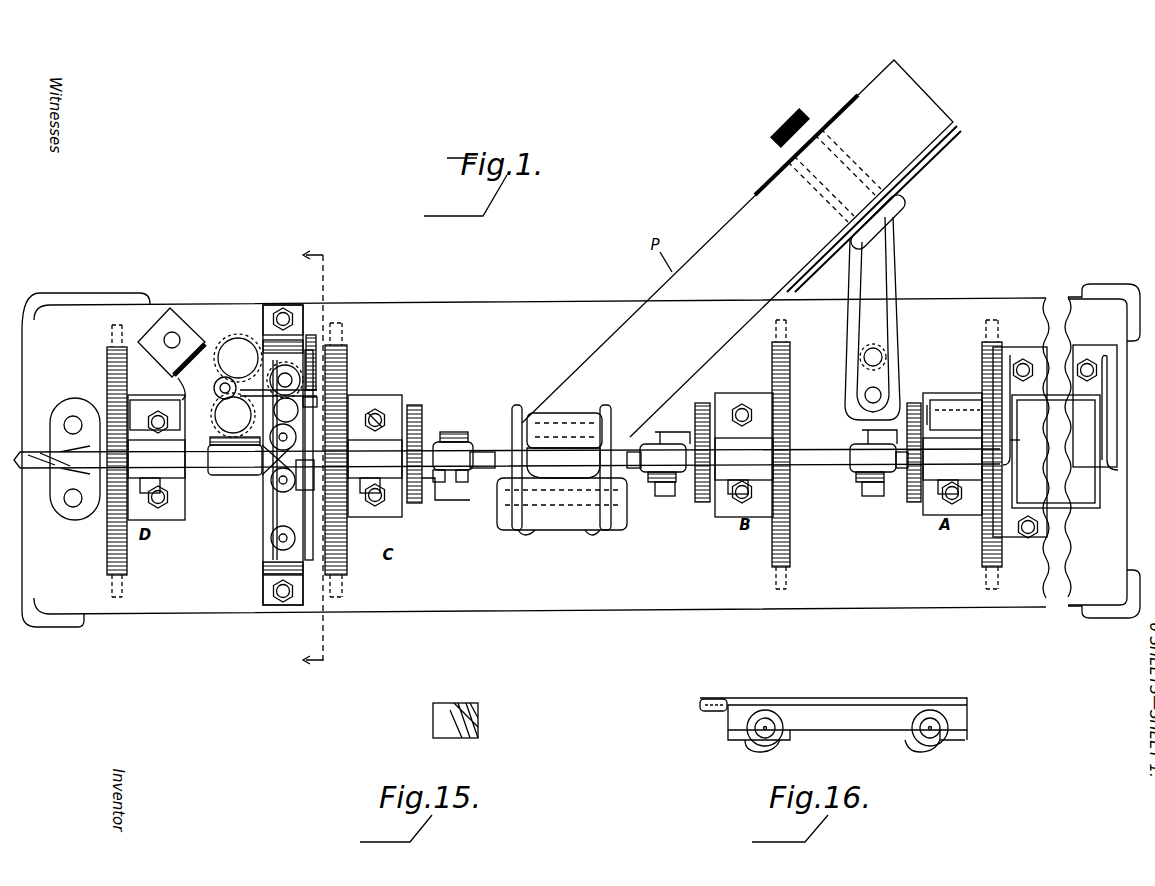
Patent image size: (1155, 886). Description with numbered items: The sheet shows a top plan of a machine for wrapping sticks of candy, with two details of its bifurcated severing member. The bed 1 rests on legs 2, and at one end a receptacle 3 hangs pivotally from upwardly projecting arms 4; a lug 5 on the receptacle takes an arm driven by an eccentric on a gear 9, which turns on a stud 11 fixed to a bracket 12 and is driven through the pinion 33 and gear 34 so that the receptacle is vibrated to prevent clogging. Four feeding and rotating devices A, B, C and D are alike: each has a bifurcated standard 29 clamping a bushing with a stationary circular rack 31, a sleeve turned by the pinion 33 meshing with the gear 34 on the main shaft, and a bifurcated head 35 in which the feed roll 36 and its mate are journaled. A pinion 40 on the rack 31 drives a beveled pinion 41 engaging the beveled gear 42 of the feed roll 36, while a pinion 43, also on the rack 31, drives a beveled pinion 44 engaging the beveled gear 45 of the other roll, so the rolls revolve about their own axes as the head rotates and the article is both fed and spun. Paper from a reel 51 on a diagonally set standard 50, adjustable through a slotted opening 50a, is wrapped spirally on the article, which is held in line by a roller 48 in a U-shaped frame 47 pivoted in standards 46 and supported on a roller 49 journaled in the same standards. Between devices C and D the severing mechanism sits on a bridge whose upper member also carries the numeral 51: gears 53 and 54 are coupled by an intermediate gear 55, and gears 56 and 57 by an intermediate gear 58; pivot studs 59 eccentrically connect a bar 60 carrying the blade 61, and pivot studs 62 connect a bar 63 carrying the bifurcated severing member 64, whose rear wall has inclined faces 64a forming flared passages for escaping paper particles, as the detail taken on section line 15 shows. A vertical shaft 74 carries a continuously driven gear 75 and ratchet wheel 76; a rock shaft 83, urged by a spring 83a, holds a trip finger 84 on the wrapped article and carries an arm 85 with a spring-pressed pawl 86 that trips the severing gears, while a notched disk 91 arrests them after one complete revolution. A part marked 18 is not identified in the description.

In FIG. 1, the bed 1 is at (606, 301).
In FIG. 1, the legs 2 is at (63, 293).
In FIG. 1, the receptacle 3 is at (1090, 425).
In FIG. 1, the arms 4 is at (1003, 360).
In FIG. 1, the lug 5 is at (316, 459).
In FIG. 1, the gear 9 is at (1018, 415).
In FIG. 1, the stud 11 is at (927, 405).
In FIG. 1, the bracket 12 is at (952, 400).
In FIG. 16, the section line 15 is at (700, 708).
In FIG. 16, the carriage plate 18 is at (745, 735).
In FIG. 1, the bifurcated standard 29 is at (110, 420).
In FIG. 1, the stationary circular rack 31 is at (555, 451).
In FIG. 1, the pinion 33 is at (107, 535).
In FIG. 1, the gear 34 is at (107, 570).
In FIG. 1, the bifurcated head 35 is at (735, 455).
In FIG. 1, the feed roll 36 is at (208, 452).
In FIG. 1, the pinion 40 is at (418, 405).
In FIG. 1, the beveled pinion 41 is at (447, 430).
In FIG. 1, the beveled gear 42 is at (462, 432).
In FIG. 1, the pinion 43 is at (413, 503).
In FIG. 1, the beveled pinion 44 is at (450, 500).
In FIG. 1, the beveled gear 45 is at (468, 470).
In FIG. 1, the standards 46 is at (505, 500).
In FIG. 1, the U-shaped frame 47 is at (565, 530).
In FIG. 1, the roller 48 is at (565, 413).
In FIG. 1, the roller 49 is at (580, 470).
In FIG. 1, the standard 50 is at (888, 275).
In FIG. 1, the slotted opening 50a is at (868, 344).
In FIG. 1, the reel 51 is at (912, 180).
In FIG. 1, the gear 53 is at (276, 485).
In FIG. 1, the gear 54 is at (270, 550).
In FIG. 1, the intermediate gear 55 is at (275, 485).
In FIG. 1, the gear 56 is at (305, 420).
In FIG. 1, the gear 57 is at (305, 375).
In FIG. 1, the intermediate gear 58 is at (305, 395).
In FIG. 1, the pivot studs 59 is at (272, 540).
In FIG. 1, the bar 60 is at (305, 500).
In FIG. 1, the severing member 61 is at (240, 490).
In FIG. 1, the pivot studs 62 is at (238, 338).
In FIG. 16, the pivot studs 62 is at (755, 740).
In FIG. 1, the bar 63 is at (229, 378).
In FIG. 16, the bar 63 is at (840, 720).
In FIG. 1, the severing member 64 is at (233, 415).
In FIG. 15, the severing member 64 is at (437, 705).
In FIG. 16, the severing member 64 is at (872, 698).
In FIG. 15, the inclined faces 64a is at (440, 730).
In FIG. 16, the inclined faces 64a is at (722, 700).
In FIG. 1, the vertically extending shaft 74 is at (195, 340).
In FIG. 1, the gear 75 is at (180, 375).
In FIG. 1, the ratchet wheel 76 is at (180, 388).
In FIG. 1, the rock shaft 83 is at (313, 440).
In FIG. 1, the spring 83a is at (313, 352).
In FIG. 1, the trip finger 84 is at (314, 455).
In FIG. 1, the arm 85 is at (362, 358).
In FIG. 1, the spring-pressed pawl 86 is at (168, 400).
In FIG. 1, the disk 91 is at (262, 460).